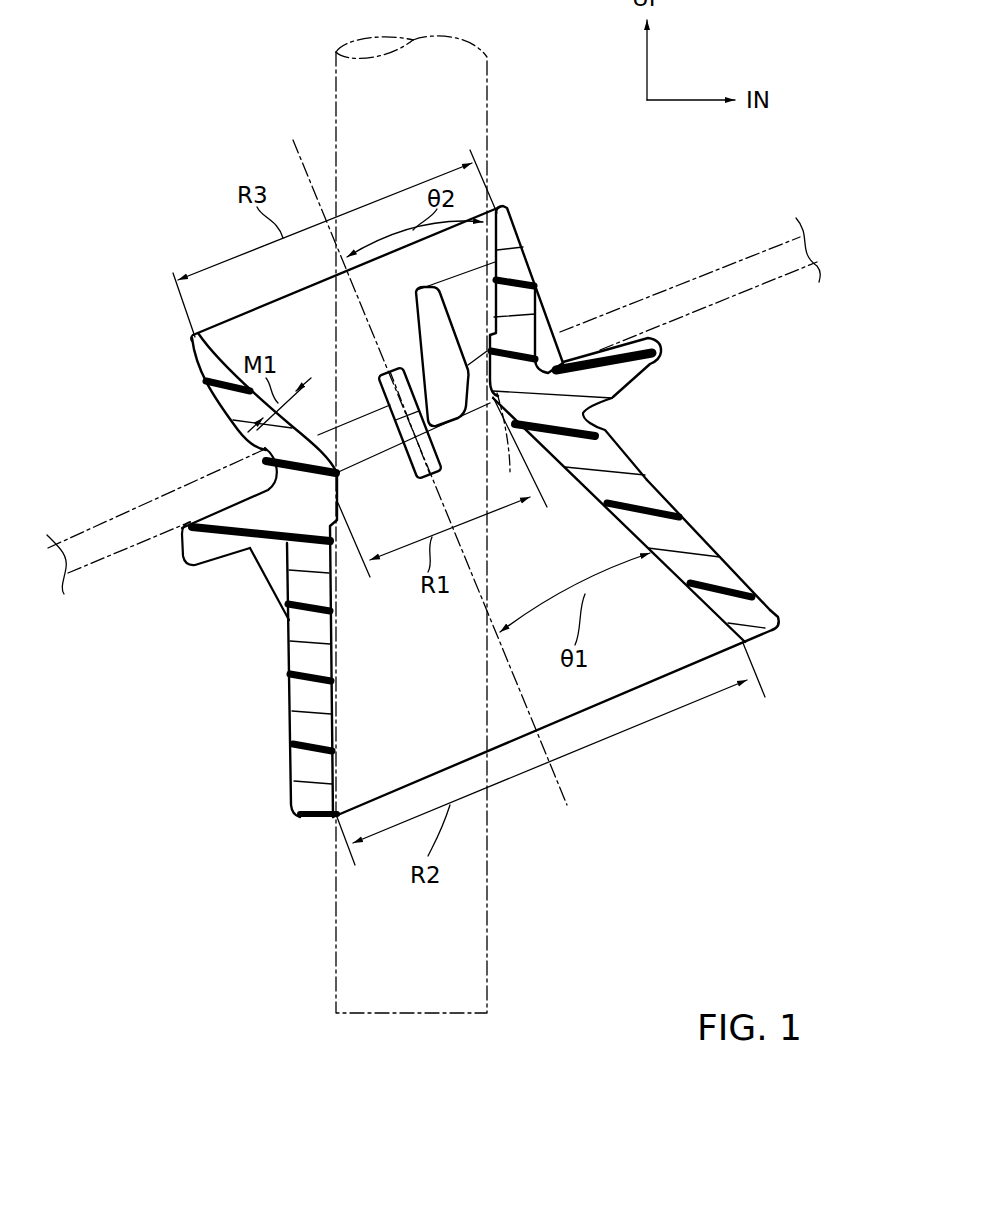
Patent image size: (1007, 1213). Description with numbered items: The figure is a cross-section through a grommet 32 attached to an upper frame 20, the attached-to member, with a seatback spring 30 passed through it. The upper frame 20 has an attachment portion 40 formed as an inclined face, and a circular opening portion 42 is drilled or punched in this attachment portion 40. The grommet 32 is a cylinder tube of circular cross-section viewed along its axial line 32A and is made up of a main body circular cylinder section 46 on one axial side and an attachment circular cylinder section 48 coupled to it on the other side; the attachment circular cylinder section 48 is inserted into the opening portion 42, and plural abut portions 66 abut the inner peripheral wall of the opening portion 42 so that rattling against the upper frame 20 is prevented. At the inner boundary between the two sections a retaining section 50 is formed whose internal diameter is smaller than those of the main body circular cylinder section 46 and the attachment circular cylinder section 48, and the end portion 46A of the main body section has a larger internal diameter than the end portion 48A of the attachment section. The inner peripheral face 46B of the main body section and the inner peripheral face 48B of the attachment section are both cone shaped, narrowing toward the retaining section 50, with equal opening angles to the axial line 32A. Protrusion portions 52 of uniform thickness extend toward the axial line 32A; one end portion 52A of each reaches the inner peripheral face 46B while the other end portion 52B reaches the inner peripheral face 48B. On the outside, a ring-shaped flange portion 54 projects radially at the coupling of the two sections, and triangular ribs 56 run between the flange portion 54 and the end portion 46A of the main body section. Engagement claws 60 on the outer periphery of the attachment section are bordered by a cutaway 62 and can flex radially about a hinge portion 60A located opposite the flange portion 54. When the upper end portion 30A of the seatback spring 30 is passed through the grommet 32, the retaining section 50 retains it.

The upper frame 20 is at (124, 582).
The seatback spring 30 is at (490, 913).
The upper end portion of the seatback spring 30A is at (336, 903).
The grommet 32 is at (230, 752).
The axial line of the grommet 32A is at (568, 798).
The attachment portion 40 is at (68, 588).
The opening portion 42 is at (268, 450).
The main body circular cylinder section 46 is at (690, 510).
The end portion of the main body circular cylinder section 46A is at (763, 648).
The inner peripheral face of the main body circular cylinder section 46B is at (670, 575).
The attachment circular cylinder section 48 is at (554, 276).
The end portion of the attachment circular cylinder section 48A is at (192, 338).
The inner peripheral face of the attachment circular cylinder section 48B is at (218, 355).
The retaining section 50 is at (507, 445).
The protrusion portion 52 is at (393, 440).
The one end portion of the protrusion portion 52A is at (370, 578).
The another end portion of the protrusion portion 52B is at (378, 378).
The flange portion 54 is at (200, 570).
The rib 56 is at (272, 598).
The engagement claw 60 is at (495, 398).
The hinge portion 60A is at (500, 245).
The cutaway 62 is at (430, 360).
The abut portion 66 is at (548, 330).